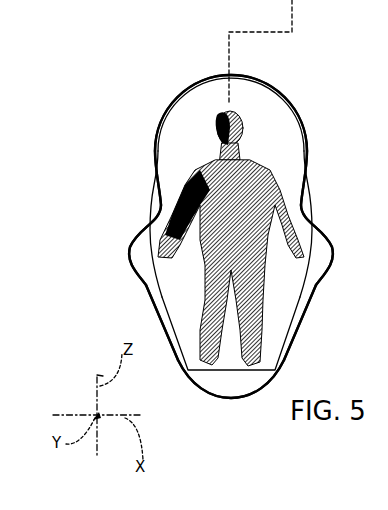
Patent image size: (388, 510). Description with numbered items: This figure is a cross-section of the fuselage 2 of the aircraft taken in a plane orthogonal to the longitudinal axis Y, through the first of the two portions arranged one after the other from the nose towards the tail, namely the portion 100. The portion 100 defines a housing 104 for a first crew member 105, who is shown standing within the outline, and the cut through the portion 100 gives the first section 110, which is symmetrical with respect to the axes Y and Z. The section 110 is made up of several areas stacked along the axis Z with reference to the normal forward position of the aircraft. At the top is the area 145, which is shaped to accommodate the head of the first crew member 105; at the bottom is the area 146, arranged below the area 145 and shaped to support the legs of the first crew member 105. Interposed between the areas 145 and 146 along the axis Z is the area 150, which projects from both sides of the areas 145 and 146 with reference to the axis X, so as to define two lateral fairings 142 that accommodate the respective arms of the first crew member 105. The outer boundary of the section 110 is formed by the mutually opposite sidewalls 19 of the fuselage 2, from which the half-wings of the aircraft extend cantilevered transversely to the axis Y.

The fuselage 2 is at (232, 419).
The sidewall 19 is at (303, 311).
The portion 100 is at (308, 114).
The housing 104 is at (180, 110).
The first crew member 105 is at (257, 174).
The first section 110 is at (200, 393).
The lateral fairing 142 is at (338, 250).
The area 145 is at (172, 133).
The area 146 is at (176, 291).
The area 150 is at (322, 241).